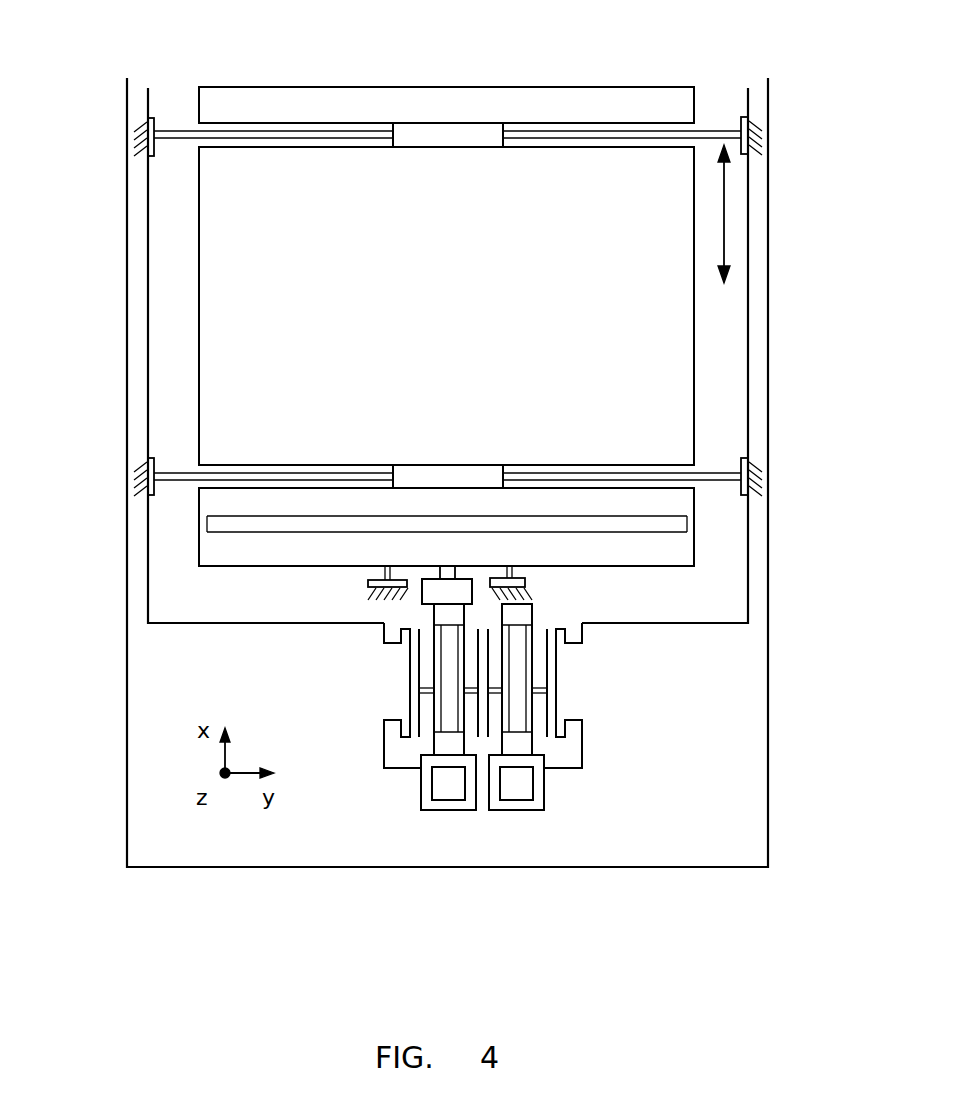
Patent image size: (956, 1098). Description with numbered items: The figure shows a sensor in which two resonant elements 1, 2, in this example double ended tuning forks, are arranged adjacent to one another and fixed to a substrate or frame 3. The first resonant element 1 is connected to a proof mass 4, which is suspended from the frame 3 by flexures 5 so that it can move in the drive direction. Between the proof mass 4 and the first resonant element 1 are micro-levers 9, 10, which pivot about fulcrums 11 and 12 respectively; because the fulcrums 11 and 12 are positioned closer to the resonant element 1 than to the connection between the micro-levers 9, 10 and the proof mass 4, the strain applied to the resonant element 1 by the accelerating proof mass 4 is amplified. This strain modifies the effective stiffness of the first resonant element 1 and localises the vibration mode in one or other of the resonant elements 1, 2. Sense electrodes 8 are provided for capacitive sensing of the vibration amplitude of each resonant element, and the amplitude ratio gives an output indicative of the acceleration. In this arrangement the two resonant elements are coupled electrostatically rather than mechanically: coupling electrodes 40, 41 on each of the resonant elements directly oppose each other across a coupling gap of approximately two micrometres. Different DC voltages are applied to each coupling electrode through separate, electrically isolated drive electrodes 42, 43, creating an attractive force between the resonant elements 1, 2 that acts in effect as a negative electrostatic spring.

The first resonant element 1 is at (437, 715).
The second resonant element 2 is at (530, 718).
The frame 3 is at (138, 389).
The proof mass 4 is at (645, 345).
The flexures 5 is at (181, 131).
The sense electrodes 8 is at (407, 662).
The micro-lever 9 is at (278, 568).
The micro-lever 10 is at (626, 568).
The fulcrum 11 is at (375, 576).
The fulcrum 12 is at (517, 571).
The coupling electrode 40 is at (458, 703).
The coupling electrode 41 is at (531, 705).
The drive electrode 42 is at (450, 790).
The drive electrode 43 is at (517, 790).